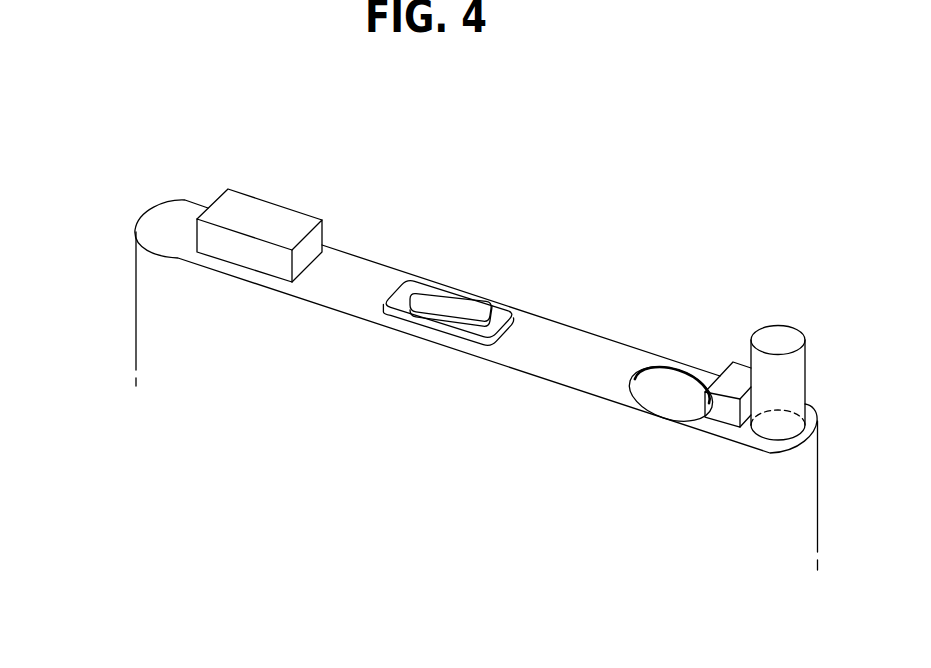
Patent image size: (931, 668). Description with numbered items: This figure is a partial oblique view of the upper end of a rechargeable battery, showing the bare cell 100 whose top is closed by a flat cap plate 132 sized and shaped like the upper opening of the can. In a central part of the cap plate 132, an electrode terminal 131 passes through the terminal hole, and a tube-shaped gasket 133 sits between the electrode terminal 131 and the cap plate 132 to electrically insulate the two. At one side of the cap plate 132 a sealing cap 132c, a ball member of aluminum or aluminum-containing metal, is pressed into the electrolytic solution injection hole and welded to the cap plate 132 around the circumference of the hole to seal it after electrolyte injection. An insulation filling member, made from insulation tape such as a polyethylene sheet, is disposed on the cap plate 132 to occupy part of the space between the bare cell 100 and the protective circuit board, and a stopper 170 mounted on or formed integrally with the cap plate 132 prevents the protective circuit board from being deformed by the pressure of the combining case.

The bare cell 100 is at (178, 294).
The cap plate 132 is at (157, 218).
The sealing cap 132c is at (662, 405).
The electrode terminal 131 is at (412, 302).
The gasket 133 is at (458, 335).
The stopper 170 is at (778, 337).